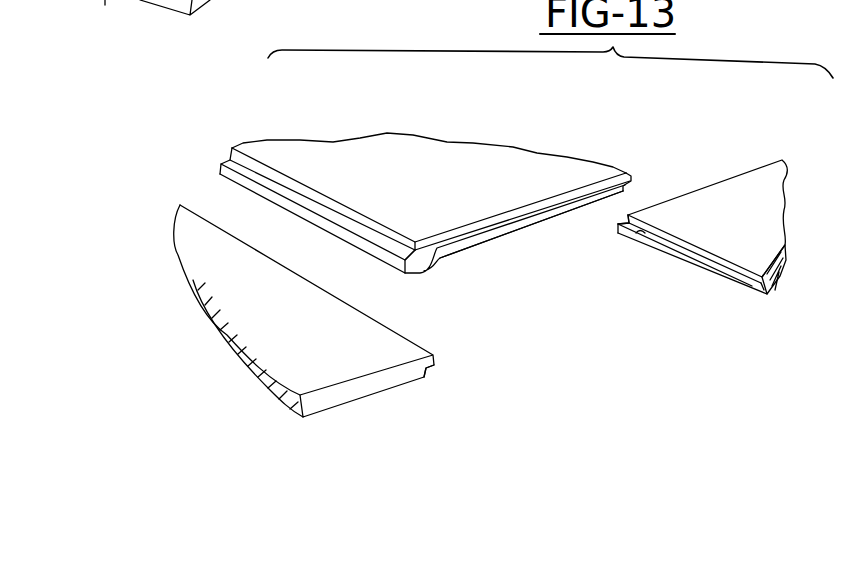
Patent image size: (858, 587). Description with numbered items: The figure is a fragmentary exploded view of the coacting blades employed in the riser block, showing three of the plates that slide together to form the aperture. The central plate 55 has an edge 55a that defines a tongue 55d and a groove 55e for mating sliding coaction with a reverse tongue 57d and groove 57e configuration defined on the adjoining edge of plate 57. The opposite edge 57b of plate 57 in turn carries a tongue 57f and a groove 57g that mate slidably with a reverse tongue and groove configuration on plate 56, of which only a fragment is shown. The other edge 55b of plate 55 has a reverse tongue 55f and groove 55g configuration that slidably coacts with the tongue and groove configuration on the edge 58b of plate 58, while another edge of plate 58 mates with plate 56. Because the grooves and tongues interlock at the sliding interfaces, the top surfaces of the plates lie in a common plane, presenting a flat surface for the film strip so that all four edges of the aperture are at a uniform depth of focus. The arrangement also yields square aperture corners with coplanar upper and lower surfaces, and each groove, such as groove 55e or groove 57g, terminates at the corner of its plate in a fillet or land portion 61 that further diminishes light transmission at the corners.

The plate 55 is at (488, 157).
The edge of plate 55 55a is at (494, 252).
The edge of plate 55 55b is at (347, 254).
The tongue 55d is at (622, 172).
The groove 55e is at (541, 204).
The reverse tongue 55f is at (220, 172).
The reverse groove 55g is at (277, 188).
The plate 56 is at (149, 20).
The plate 57 is at (762, 230).
The edge of plate 57 57b is at (695, 283).
The reverse tongue 57d is at (628, 215).
The reverse groove 57e is at (728, 172).
The tongue 57f is at (732, 263).
The groove 57g is at (760, 287).
The plate 58 is at (293, 373).
The edge of plate 58 58b is at (443, 377).
The land portion 61 is at (432, 262).